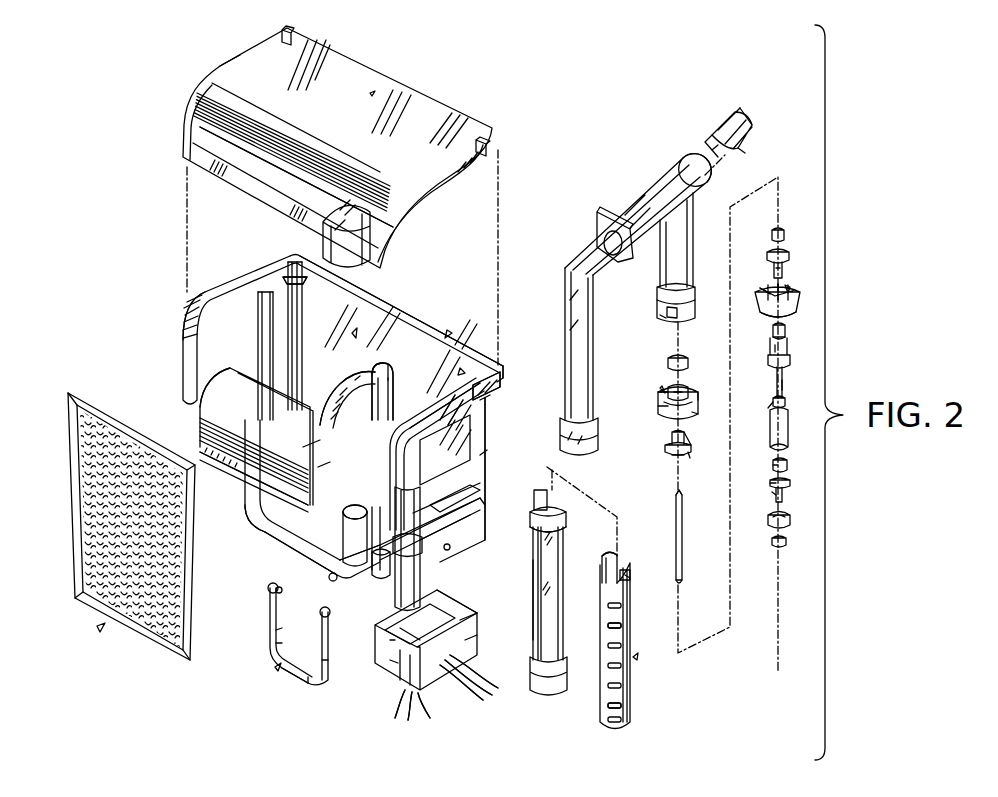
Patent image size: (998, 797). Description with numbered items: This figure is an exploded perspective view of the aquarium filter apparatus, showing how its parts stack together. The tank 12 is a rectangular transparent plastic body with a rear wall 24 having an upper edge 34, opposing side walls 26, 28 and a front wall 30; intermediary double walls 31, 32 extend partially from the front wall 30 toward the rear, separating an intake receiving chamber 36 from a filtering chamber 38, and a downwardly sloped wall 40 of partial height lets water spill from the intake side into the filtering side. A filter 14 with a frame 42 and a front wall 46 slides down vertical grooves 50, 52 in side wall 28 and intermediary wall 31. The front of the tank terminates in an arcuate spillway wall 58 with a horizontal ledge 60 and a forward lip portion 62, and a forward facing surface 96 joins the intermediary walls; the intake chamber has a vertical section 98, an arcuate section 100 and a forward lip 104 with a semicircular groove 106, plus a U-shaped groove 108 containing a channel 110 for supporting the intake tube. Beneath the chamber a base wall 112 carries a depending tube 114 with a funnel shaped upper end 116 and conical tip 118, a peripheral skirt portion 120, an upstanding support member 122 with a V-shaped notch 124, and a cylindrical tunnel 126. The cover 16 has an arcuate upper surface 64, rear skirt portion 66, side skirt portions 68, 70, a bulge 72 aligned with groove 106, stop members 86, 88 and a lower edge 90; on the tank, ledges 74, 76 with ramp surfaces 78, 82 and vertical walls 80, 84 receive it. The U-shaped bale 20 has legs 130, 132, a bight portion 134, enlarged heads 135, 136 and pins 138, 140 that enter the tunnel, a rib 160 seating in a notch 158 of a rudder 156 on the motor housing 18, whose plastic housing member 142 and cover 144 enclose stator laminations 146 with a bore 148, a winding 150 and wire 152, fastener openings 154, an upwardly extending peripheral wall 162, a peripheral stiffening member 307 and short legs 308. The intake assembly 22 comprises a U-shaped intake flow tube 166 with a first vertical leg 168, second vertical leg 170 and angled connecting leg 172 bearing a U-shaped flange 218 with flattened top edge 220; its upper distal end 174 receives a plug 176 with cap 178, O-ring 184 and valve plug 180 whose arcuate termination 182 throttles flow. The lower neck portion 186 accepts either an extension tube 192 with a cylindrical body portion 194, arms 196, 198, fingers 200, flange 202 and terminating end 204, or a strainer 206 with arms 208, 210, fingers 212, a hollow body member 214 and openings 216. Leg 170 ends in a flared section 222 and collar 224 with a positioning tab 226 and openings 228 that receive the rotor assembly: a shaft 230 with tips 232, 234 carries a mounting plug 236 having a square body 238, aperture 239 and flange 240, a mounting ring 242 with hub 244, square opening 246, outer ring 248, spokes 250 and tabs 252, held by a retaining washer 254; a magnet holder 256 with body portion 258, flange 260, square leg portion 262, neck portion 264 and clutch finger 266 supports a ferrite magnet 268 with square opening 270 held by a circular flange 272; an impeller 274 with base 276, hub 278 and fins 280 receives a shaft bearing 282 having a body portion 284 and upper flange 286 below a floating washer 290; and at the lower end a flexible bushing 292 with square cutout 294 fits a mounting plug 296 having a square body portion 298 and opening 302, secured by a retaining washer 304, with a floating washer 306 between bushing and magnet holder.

The tank 12 is at (448, 331).
The filter 14 is at (103, 625).
The cover member 16 is at (375, 92).
The motor housing 18 is at (495, 678).
The U-shaped bale 20 is at (277, 667).
The intake assembly 22 is at (672, 270).
The rear wall 24 is at (398, 318).
The side wall 26 is at (482, 455).
The side wall 28 is at (240, 290).
The front wall 30 is at (271, 534).
The intermediary wall 31 is at (357, 376).
The intermediary wall 32 is at (393, 370).
The upper edge 34 is at (462, 368).
The intake receiving chamber 36 is at (490, 356).
The filtering chamber 38 is at (354, 332).
The downwardly sloped wall 40 is at (424, 457).
The frame 42 is at (144, 525).
The front wall 46 is at (178, 573).
The vertical groove 50 is at (260, 292).
The vertical groove 52 is at (378, 372).
The forward wall 58 is at (197, 442).
The horizontal ledge 60 is at (318, 405).
The forward lip portion 62 is at (224, 465).
The arcuate upper surface 64 is at (357, 77).
The rear skirt portion 66 is at (457, 117).
The side skirt portion 68 is at (464, 162).
The side skirt portion 70 is at (237, 54).
The semicircular protruding bulge 72 is at (322, 247).
The ledge 74 is at (217, 300).
The arcuate ledge 76 is at (487, 424).
The ramp surface 78 is at (289, 280).
The vertical wall 80 is at (303, 284).
The ramp surface 82 is at (481, 402).
The vertical wall 84 is at (500, 375).
The stop member 86 is at (296, 33).
The stop member 88 is at (491, 136).
The lower edge 90 is at (236, 187).
The forward facing surface 96 is at (304, 447).
The vertical section 98 is at (319, 467).
The forward arcuately sloping section 100 is at (295, 536).
The forward lip 104 is at (346, 553).
The semicircular groove 106 is at (343, 520).
The U-shaped groove 108 is at (410, 387).
The channel 110 is at (372, 380).
The base wall 112 is at (461, 530).
The tube 114 is at (421, 583).
The funnel shaped upper end 116 is at (350, 603).
The lower conical tip 118 is at (400, 607).
The peripheral skirt portion 120 is at (470, 548).
The upstanding support member 122 is at (464, 516).
The bifurcated V-shaped receiving notch 124 is at (464, 487).
The hollow cylindrical tunnel 126 is at (450, 547).
The leg 130 is at (293, 639).
The leg 132 is at (330, 662).
The bight portion 134 is at (305, 678).
The enlarged head 135 is at (268, 592).
The enlarged head 136 is at (332, 617).
The pin 138 is at (283, 592).
The pin 140 is at (279, 630).
The plastic housing member 142 is at (472, 620).
The cover 144 is at (440, 680).
The stator laminations 146 is at (462, 698).
The bore 148 is at (404, 685).
The winding 150 is at (447, 633).
The wire 152 is at (470, 643).
The openings 154 is at (397, 665).
The rudder 156 is at (470, 684).
The notch 158 is at (452, 698).
The rib 160 is at (280, 643).
The upwardly extending peripheral wall 162 is at (461, 674).
The U-shaped intake flow tube 166 is at (586, 260).
The first vertical leg 168 is at (590, 307).
The second vertical leg 170 is at (666, 263).
The connecting leg 172 is at (631, 204).
The upper distal end 174 is at (681, 166).
The plug 176 is at (743, 119).
The cap 178 is at (756, 135).
The valve plug 180 is at (713, 136).
The arcuately shaped termination 182 is at (719, 155).
The O-ring 184 is at (747, 152).
The neck portion 186 is at (599, 438).
The extension tube 192 is at (564, 588).
The cylindrical body portion 194 is at (560, 605).
The arm 196 is at (566, 514).
The arm 198 is at (540, 490).
The fingers 200 is at (548, 505).
The flange 202 is at (566, 523).
The terminating end 204 is at (553, 690).
The strainer 206 is at (636, 656).
The arm 208 is at (620, 558).
The arm 210 is at (632, 568).
The fingers 212 is at (631, 578).
The hollow cylindrical body member 214 is at (622, 628).
The openings 216 is at (622, 707).
The U-shaped flange 218 is at (622, 256).
The flattened top edge 220 is at (598, 214).
The outwardly flared section 222 is at (694, 289).
The collar 224 is at (686, 317).
The positioning tab 226 is at (697, 302).
The openings 228 is at (662, 318).
The shaft 230 is at (683, 546).
The upper tip 232 is at (683, 496).
The lower tip 234 is at (683, 584).
The mounting plug 236 is at (690, 458).
The square shaped body 238 is at (668, 449).
The aperture 239 is at (690, 444).
The circular peripheral flange 240 is at (676, 456).
The mounting ring 242 is at (660, 388).
The circular hub 244 is at (658, 405).
The square shaped central opening 246 is at (658, 392).
The outer circular ring 248 is at (699, 396).
The spokes 250 is at (684, 388).
The tabs 252 is at (695, 415).
The push on retaining washer 254 is at (688, 362).
The magnet holder 256 is at (789, 356).
The cylindrical body portion 258 is at (768, 354).
The peripheral flange 260 is at (776, 378).
The square shaped leg portion 262 is at (784, 383).
The reduced diameter cylindrical neck portion 264 is at (772, 330).
The outwardly directed finger 266 is at (786, 333).
The magnet 268 is at (789, 430).
The square opening 270 is at (786, 404).
The circular flange 272 is at (771, 408).
The impeller 274 is at (789, 300).
The circular base 276 is at (790, 311).
The upstanding central circular hub 278 is at (788, 286).
The fins 280 is at (764, 290).
The shaft bearing 282 is at (772, 254).
The cylindrical body portion 284 is at (773, 266).
The upper flange 286 is at (786, 250).
The floating washer 290 is at (782, 229).
The flexible bushing 292 is at (790, 519).
The square cutout 294 is at (784, 500).
The mounting plug 296 is at (791, 484).
The square body portion 298 is at (774, 494).
The opening 302 is at (788, 463).
The push-on retaining washer 304 is at (781, 547).
The floating washer 306 is at (772, 465).
The peripheral stiffening member 307 is at (325, 600).
The short legs 308 is at (770, 483).